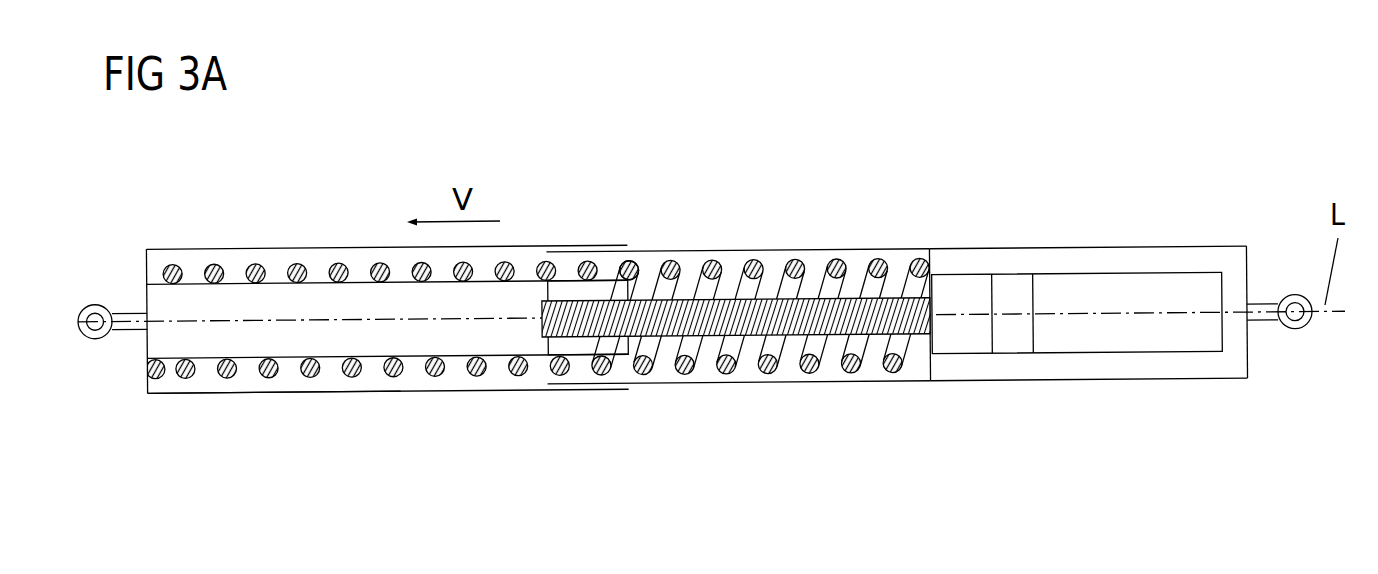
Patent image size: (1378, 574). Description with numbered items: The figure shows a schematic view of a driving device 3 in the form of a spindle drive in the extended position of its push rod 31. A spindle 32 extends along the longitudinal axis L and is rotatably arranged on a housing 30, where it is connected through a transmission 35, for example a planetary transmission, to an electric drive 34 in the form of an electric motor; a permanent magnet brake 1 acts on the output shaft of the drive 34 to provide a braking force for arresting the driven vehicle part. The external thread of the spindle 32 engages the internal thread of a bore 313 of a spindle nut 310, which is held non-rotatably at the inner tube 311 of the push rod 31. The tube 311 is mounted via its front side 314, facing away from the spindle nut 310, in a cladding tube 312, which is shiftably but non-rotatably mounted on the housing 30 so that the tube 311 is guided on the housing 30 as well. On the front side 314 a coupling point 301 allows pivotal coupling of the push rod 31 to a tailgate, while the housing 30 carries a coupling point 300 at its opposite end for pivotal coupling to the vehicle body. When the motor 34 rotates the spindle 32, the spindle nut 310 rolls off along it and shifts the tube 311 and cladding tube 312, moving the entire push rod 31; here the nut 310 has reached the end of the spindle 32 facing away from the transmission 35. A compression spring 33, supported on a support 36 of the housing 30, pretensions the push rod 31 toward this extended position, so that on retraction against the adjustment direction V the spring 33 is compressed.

The permanent magnet brake 1 is at (1008, 342).
The driving device 3 is at (1052, 178).
The housing 30 is at (1142, 245).
The push rod 31 is at (262, 230).
The spindle 32 is at (730, 252).
The spring 33 is at (763, 376).
The electric drive 34 is at (1123, 337).
The transmission 35 is at (950, 340).
The support 36 is at (963, 268).
The coupling point 300 is at (1295, 330).
The coupling point 301 is at (97, 333).
The spindle nut 310 is at (582, 343).
The tube 311 is at (375, 358).
The cladding tube 312 is at (225, 391).
The bore 313 is at (632, 262).
The front side 314 is at (147, 268).